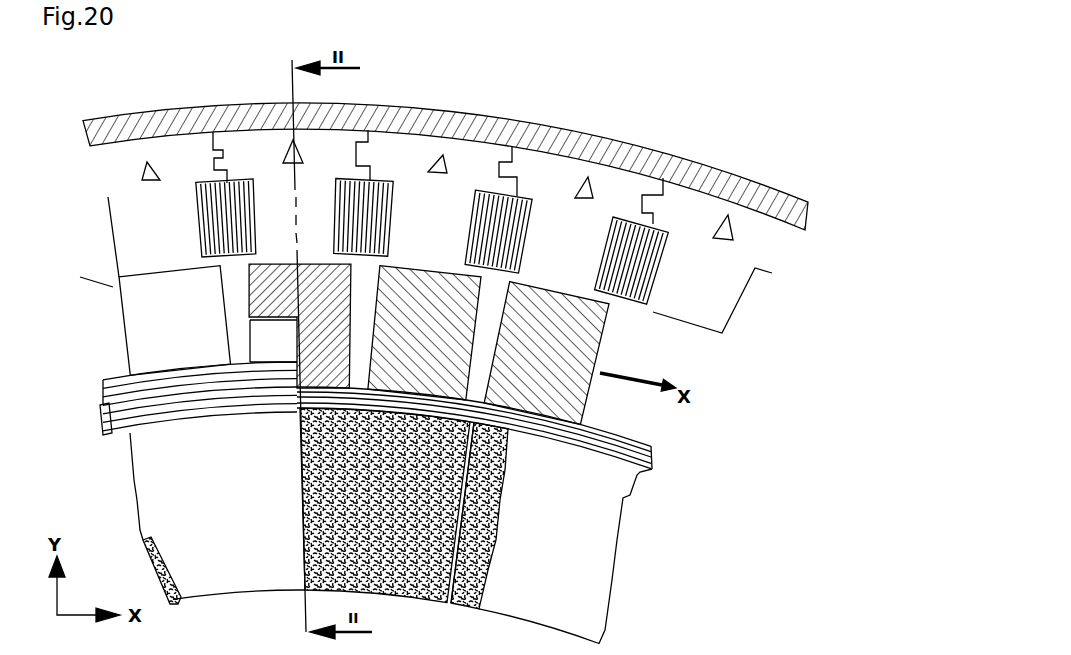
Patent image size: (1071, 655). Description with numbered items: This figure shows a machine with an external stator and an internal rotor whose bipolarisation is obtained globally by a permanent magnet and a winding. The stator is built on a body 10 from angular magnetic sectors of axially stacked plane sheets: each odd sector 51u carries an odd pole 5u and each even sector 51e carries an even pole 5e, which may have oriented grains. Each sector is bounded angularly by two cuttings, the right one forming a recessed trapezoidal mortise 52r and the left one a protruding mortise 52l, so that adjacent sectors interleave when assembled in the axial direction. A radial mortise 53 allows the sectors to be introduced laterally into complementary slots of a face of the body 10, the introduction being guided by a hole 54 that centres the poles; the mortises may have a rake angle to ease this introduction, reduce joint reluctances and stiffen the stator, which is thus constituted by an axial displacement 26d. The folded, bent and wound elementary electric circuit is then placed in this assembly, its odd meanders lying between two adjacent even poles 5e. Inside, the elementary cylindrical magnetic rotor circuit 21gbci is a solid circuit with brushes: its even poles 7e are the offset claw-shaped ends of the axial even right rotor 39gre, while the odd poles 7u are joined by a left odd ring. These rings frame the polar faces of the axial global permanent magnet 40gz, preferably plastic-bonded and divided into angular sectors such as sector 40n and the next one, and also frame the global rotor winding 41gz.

The body 10 is at (687, 173).
The protruding mortise 52l is at (217, 147).
The recessed trapezoidal mortise 52r is at (370, 153).
The odd sector 51u is at (263, 163).
The even sector 51e is at (410, 165).
The radial mortise 53 is at (290, 118).
The hole 54 is at (440, 150).
The even pole 5e is at (432, 255).
The odd pole 5u is at (548, 263).
The axial displacement 26d is at (782, 258).
The odd rotor pole 7u is at (148, 297).
The even rotor pole 7e is at (270, 307).
The global rotor winding 41gz is at (106, 426).
The elementary cylindrical magnetic rotor circuit 21gbci is at (660, 420).
The axial even right rotor 39gre is at (607, 483).
The angular sector of global permanent magnet 40n is at (490, 557).
The axial global permanent magnet 40gz is at (143, 557).